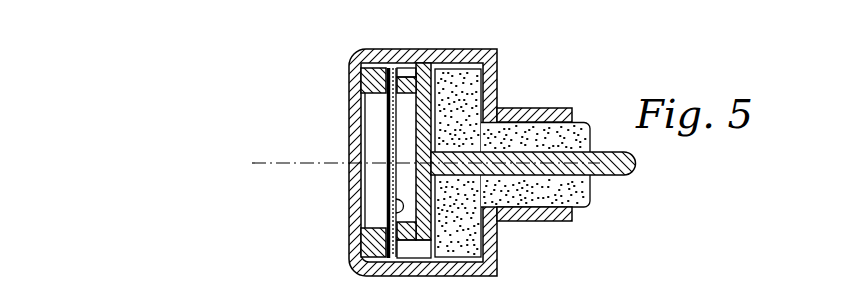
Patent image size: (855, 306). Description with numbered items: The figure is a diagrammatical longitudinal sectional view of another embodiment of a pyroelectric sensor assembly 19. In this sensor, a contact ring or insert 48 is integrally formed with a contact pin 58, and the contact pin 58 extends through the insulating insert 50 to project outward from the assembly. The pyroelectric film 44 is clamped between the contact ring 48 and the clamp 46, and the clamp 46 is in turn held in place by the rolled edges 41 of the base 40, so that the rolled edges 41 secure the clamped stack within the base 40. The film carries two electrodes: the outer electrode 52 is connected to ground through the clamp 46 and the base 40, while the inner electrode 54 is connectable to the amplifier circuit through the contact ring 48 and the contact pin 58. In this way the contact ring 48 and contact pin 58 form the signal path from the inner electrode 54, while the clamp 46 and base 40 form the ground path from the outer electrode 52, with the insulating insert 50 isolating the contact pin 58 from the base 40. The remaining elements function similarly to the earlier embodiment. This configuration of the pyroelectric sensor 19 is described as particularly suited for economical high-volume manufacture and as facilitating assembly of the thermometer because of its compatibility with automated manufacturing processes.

The pyroelectric sensor assembly 19 is at (264, 197).
The base 40 is at (497, 67).
The rolled edges 41 is at (351, 78).
The pyroelectric film 44 is at (380, 132).
The clamp 46 is at (366, 92).
The contact ring 48 is at (413, 69).
The insulating insert 50 is at (513, 128).
The outer electrode 52 is at (381, 181).
The inner electrode 54 is at (386, 212).
The contact pin 58 is at (616, 174).